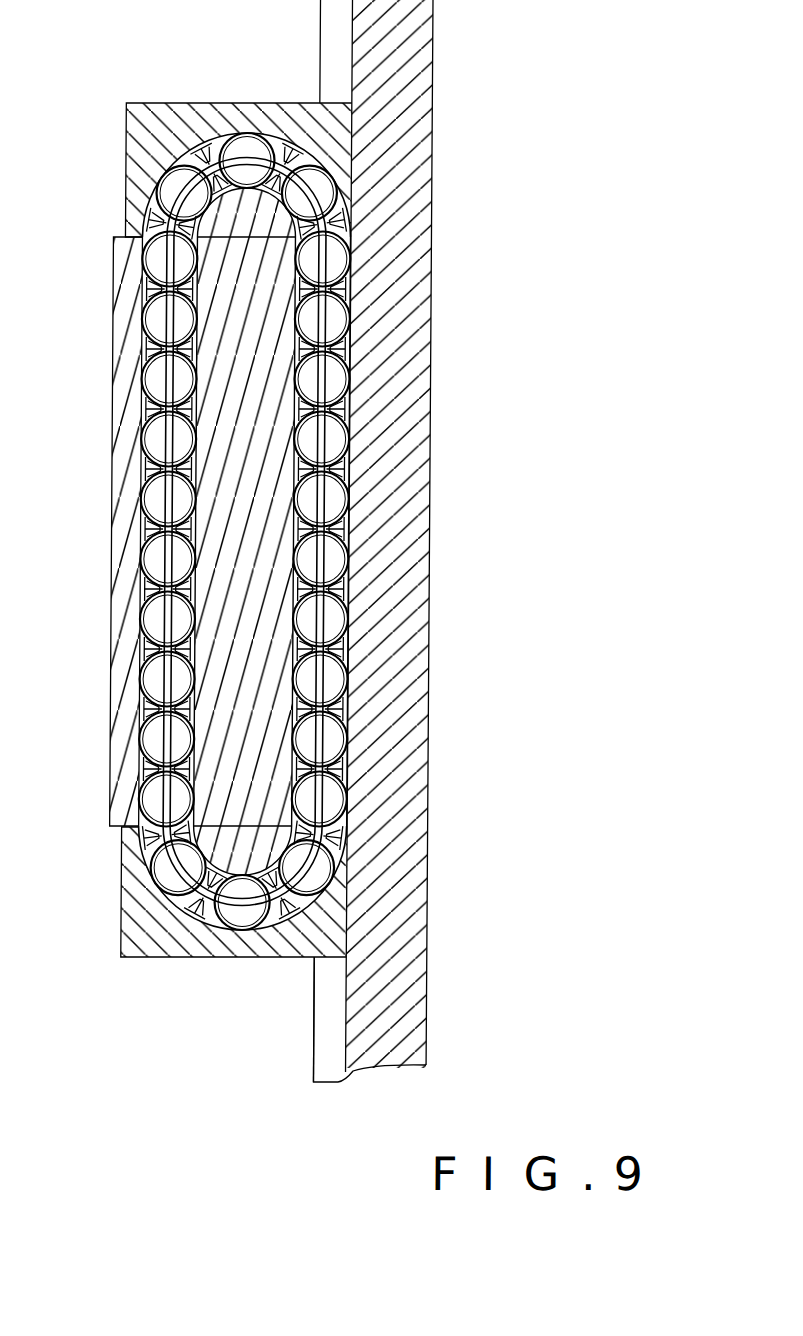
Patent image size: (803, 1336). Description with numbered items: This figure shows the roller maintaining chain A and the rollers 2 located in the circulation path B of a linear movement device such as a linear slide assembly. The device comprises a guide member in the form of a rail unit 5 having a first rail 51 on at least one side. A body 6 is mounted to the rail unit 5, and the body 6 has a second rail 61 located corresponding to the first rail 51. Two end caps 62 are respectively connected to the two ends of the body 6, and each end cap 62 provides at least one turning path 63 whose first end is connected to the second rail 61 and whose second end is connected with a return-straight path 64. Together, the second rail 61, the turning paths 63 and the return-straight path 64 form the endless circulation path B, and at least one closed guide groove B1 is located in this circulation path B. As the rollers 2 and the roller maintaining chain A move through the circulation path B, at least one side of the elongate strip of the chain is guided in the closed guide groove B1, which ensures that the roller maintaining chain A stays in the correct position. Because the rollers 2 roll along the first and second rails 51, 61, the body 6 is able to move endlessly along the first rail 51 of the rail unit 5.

The rollers 2 is at (336, 443).
The rail unit 5 is at (413, 228).
The body 6 is at (127, 551).
The first rail 51 is at (335, 1028).
The second rail 61 is at (300, 713).
The end cap 62 is at (154, 122).
The turning path 63 is at (193, 904).
The return-straight path 64 is at (147, 776).
The roller maintaining chain A is at (320, 514).
The circulation path B is at (319, 1100).
The closed guide groove B1 is at (328, 571).